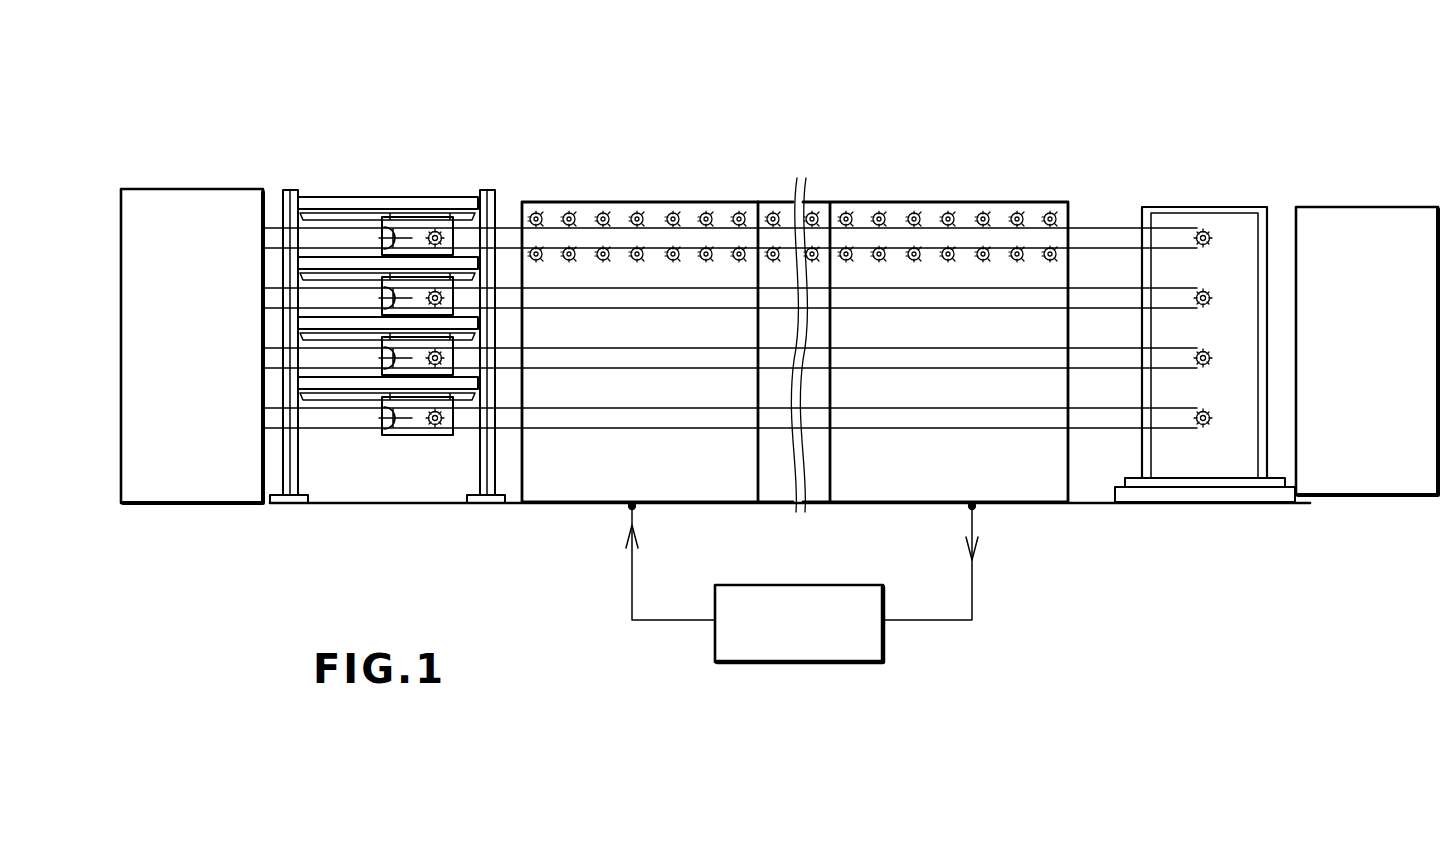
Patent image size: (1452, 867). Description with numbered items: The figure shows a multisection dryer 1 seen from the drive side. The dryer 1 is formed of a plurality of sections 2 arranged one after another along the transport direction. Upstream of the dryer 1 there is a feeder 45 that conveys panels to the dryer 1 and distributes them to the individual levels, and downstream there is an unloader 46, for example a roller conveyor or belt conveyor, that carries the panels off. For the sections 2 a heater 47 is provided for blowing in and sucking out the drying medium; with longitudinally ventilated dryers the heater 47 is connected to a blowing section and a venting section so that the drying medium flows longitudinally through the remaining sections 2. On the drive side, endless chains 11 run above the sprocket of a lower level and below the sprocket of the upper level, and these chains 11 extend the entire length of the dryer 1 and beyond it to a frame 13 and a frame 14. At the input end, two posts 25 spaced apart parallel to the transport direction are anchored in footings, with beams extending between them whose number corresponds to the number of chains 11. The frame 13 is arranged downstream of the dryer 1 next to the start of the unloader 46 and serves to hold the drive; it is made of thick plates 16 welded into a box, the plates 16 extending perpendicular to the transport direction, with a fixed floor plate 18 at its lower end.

The dryer 1 is at (708, 136).
The sections 2 is at (628, 202).
The endless chain 11 is at (1081, 286).
The frame 13 is at (1196, 106).
The frame 14 is at (399, 168).
The plates 16 is at (1258, 207).
The floor plate 18 is at (1222, 481).
The posts 25 is at (286, 190).
The feeder 45 is at (200, 200).
The unloader 46 is at (1353, 222).
The heater 47 is at (866, 645).